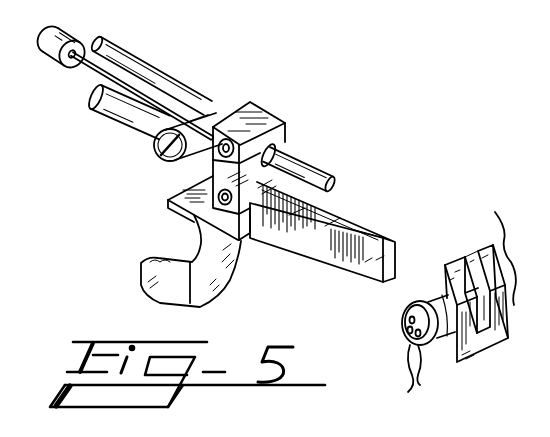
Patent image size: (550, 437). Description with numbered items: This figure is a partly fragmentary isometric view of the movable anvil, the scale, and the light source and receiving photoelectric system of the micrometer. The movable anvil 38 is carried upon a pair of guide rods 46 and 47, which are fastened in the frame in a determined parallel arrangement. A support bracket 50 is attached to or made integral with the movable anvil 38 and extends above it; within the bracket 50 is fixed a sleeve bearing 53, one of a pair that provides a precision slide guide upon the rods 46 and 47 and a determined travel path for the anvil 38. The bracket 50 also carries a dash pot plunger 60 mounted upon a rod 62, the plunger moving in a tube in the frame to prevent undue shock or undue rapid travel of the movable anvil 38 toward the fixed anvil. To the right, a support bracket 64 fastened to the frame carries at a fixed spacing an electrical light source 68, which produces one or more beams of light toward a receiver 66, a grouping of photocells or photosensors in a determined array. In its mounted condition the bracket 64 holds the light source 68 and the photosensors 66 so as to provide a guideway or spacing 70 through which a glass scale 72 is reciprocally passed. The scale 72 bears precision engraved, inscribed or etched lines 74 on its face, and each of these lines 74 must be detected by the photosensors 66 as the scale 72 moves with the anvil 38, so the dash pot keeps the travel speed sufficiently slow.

The movable anvil 38 is at (235, 276).
The guide rod 46 is at (108, 42).
The guide rod 47 is at (110, 106).
The support bracket 50 is at (257, 110).
The sleeve bearing 53 is at (289, 133).
The dash pot plunger 60 is at (72, 37).
The rod 62 is at (80, 66).
The support bracket 64 is at (500, 345).
The receiver 66 is at (414, 298).
The electrical light source 68 is at (515, 270).
The guideway 70 is at (444, 266).
The glass scale 72 is at (348, 212).
The lines of the scale 74 is at (368, 235).